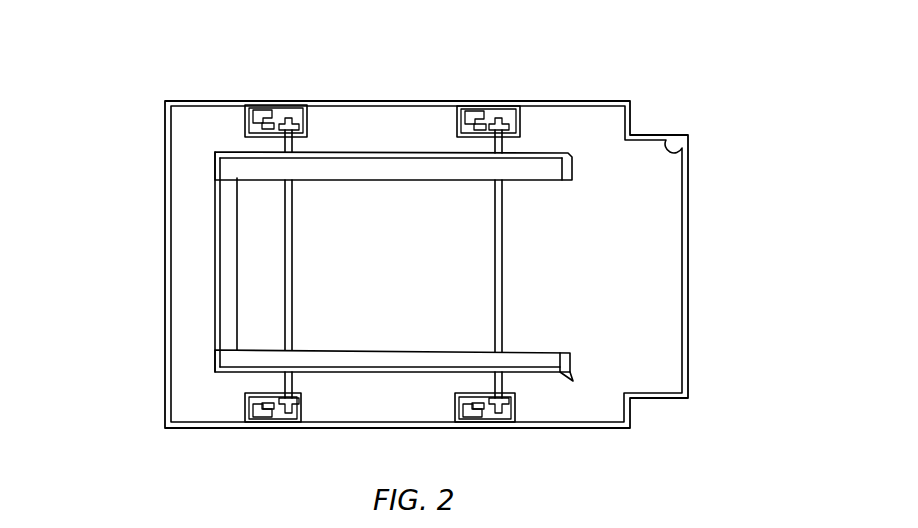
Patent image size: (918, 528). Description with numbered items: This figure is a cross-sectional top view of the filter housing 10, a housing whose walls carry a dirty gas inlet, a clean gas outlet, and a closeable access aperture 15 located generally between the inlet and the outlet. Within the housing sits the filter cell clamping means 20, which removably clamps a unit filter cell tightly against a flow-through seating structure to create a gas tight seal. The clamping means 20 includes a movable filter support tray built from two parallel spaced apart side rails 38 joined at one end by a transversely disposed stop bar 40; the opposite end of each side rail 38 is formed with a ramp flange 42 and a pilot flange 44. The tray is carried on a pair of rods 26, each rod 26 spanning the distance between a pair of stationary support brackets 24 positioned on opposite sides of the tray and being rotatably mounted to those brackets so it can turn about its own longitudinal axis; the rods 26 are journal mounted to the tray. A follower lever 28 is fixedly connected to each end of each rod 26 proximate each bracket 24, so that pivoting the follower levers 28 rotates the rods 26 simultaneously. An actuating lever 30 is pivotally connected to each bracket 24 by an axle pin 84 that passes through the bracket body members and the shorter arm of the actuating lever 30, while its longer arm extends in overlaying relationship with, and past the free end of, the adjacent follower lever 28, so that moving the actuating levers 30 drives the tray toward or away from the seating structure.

The filter housing 10 is at (729, 75).
The closeable access aperture 15 is at (688, 155).
The filter cell clamping means 20 is at (239, 267).
The stationary support bracket 24 is at (287, 107).
The rod 26 is at (292, 242).
The follower lever 28 is at (296, 107).
The actuating lever 30 is at (262, 124).
The side rail 38 is at (397, 152).
The stop bar 40 is at (233, 307).
The ramp flange 42 is at (567, 150).
The pilot flange 44 is at (576, 170).
The axle pin 84 is at (263, 138).